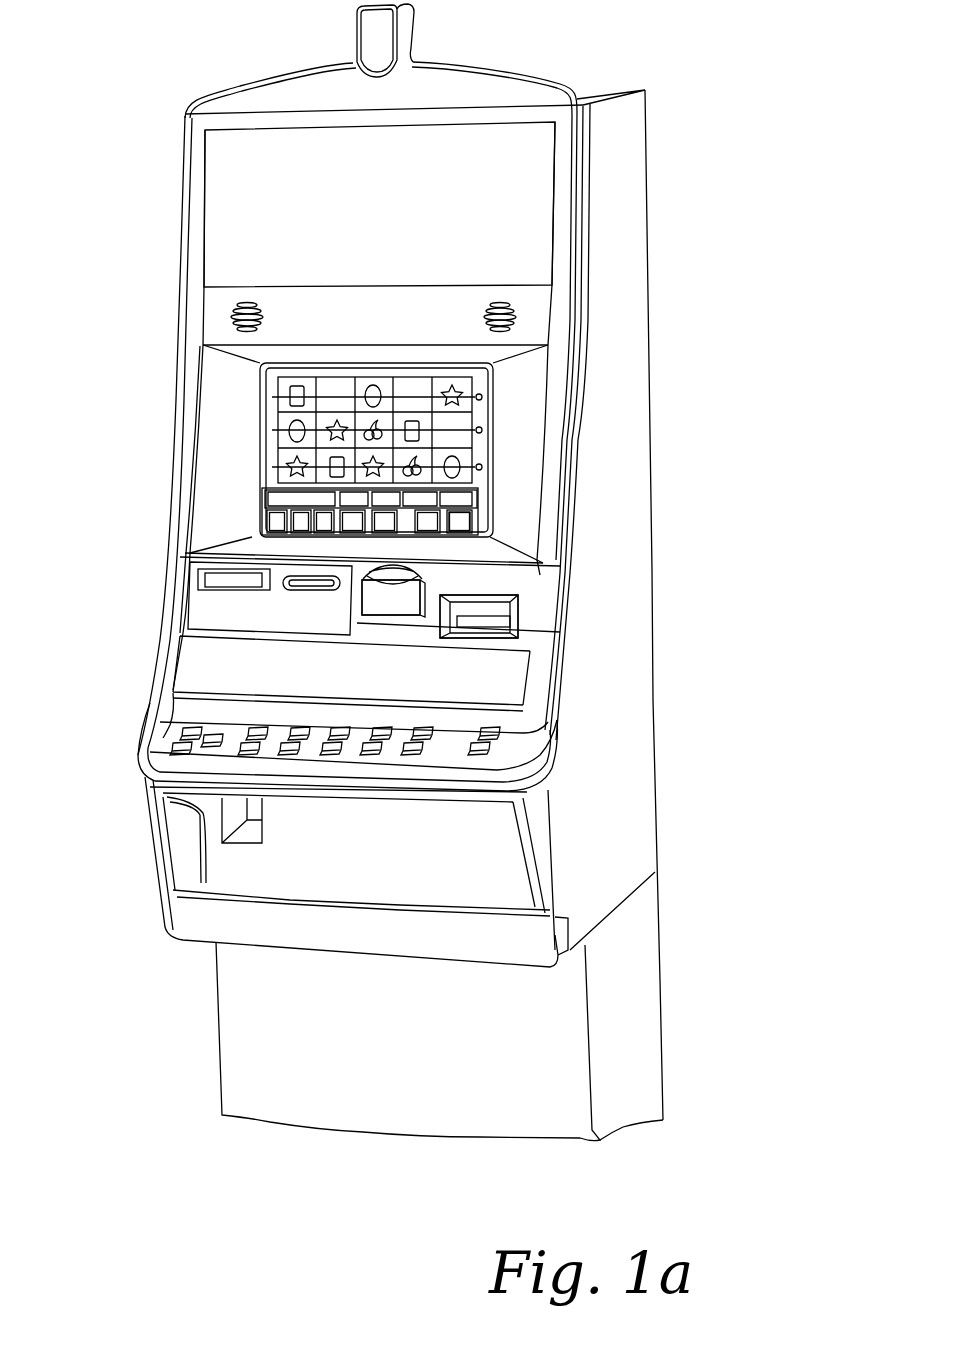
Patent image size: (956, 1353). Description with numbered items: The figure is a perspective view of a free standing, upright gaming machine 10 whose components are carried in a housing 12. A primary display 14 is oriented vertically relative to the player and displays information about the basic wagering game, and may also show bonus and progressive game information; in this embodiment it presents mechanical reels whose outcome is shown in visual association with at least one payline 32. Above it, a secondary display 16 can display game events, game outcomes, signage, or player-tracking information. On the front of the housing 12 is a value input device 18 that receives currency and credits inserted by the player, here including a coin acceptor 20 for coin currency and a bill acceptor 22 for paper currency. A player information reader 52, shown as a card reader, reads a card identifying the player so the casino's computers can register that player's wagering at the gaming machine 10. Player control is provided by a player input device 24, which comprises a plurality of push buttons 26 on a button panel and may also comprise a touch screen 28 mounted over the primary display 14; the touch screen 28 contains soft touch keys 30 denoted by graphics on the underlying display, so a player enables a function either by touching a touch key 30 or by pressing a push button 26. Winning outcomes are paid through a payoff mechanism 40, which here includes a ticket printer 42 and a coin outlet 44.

The gaming machine 10 is at (143, 117).
The housing 12 is at (638, 230).
The primary display 14 is at (272, 400).
The secondary display 16 is at (220, 214).
The value input device 18 is at (423, 576).
The coin acceptor 20 is at (401, 600).
The bill acceptor 22 is at (492, 640).
The player input device 24 is at (472, 525).
The push buttons 26 is at (370, 740).
The touch screen 28 is at (484, 500).
The soft touch keys 30 is at (270, 528).
The payline 32 is at (316, 390).
The payoff mechanism 40 is at (203, 583).
The ticket printer 42 is at (213, 576).
The coin outlet 44 is at (225, 820).
The player information reader 52 is at (295, 590).